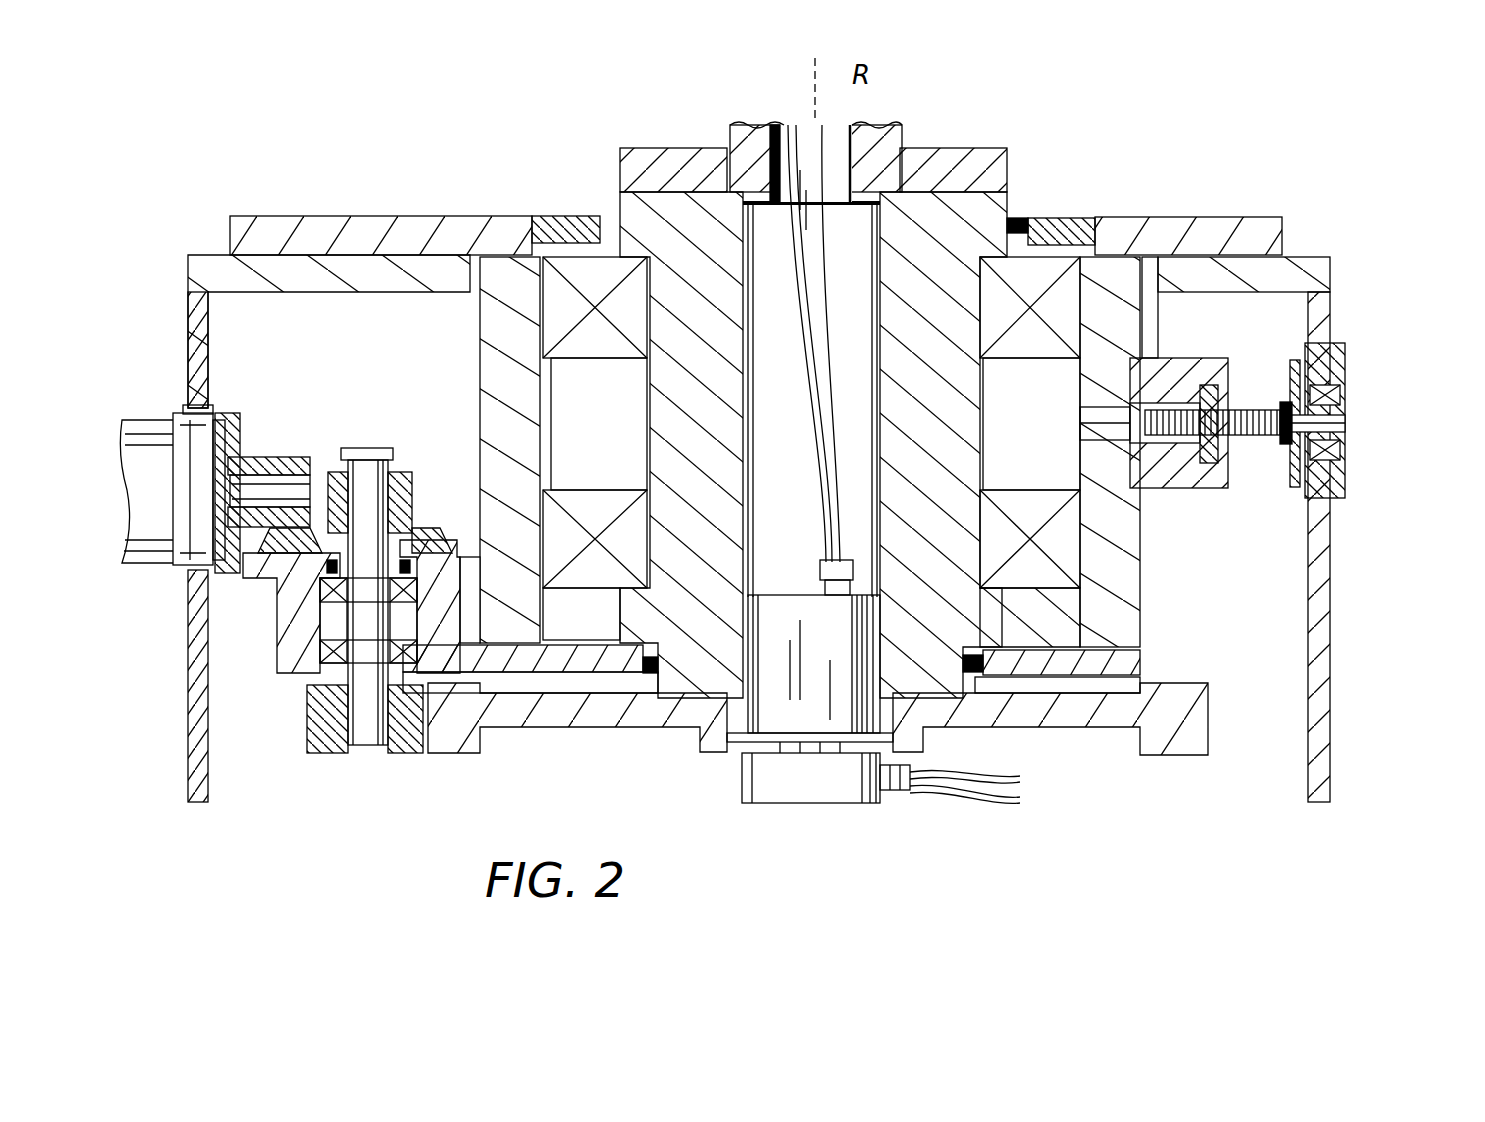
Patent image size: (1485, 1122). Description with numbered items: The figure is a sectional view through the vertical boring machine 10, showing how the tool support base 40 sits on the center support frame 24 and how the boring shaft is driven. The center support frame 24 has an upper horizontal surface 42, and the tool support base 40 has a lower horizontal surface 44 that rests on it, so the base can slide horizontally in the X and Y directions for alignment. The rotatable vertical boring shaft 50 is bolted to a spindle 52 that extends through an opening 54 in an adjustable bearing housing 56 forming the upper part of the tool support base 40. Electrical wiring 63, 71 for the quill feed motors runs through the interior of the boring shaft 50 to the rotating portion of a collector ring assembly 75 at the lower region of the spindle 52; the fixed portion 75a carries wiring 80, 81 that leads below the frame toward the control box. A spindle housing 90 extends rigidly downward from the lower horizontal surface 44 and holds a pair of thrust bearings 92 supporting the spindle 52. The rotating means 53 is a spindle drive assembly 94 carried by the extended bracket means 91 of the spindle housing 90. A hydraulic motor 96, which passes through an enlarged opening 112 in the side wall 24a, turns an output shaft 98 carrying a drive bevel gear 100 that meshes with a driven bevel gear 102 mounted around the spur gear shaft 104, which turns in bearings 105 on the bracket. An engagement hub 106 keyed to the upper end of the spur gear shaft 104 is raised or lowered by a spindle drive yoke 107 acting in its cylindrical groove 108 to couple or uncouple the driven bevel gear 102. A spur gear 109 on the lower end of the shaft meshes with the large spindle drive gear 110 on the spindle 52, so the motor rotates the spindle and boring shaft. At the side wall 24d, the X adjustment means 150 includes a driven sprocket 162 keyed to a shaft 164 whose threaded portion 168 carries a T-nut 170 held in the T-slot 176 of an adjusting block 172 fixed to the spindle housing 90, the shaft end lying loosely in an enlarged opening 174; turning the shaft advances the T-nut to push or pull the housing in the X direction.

The vertical boring machine 10 is at (1176, 122).
The center support frame 24 is at (155, 318).
The side wall 24a is at (186, 338).
The side wall 24d is at (1331, 592).
The tool support base 40 is at (1194, 216).
The upper horizontal surface 42 is at (210, 255).
The lower horizontal surface 44 is at (362, 265).
The vertical boring shaft 50 is at (918, 148).
The spindle 52 is at (618, 202).
The rotating means 53 is at (440, 806).
The opening 54 is at (1012, 225).
The adjustable bearing housing 56 is at (1075, 216).
The electrical wiring 63 is at (806, 396).
The electrical wiring 71 is at (824, 360).
The collector ring assembly 75 is at (808, 600).
The fixed portion 75a is at (750, 778).
The wiring 80 is at (978, 774).
The wiring 81 is at (986, 806).
The spindle housing 90 is at (480, 318).
The extended bracket means 91 is at (300, 690).
The thrust bearings 92 is at (610, 452).
The spindle drive assembly 94 is at (245, 628).
The hydraulic motor 96 is at (126, 462).
The output shaft 98 is at (255, 452).
The drive bevel gear 100 is at (283, 456).
The driven bevel gear 102 is at (272, 556).
The spur gear shaft 104 is at (372, 742).
The bearings 105 is at (340, 636).
The engagement hub 106 is at (405, 470).
The spindle drive yoke 107 is at (333, 470).
The cylindrical groove 108 is at (420, 490).
The spur gear 109 is at (310, 745).
The spindle drive gear 110 is at (510, 730).
The enlarged opening 112 is at (175, 402).
The X adjustment means 150 is at (1380, 322).
The driven sprocket 162 is at (1290, 490).
The shaft 164 is at (1347, 425).
The threaded portion 168 is at (1240, 410).
The T-nut 170 is at (1210, 380).
The adjusting block 172 is at (1150, 495).
The enlarged opening 174 is at (1082, 420).
The T-slot 176 is at (1210, 490).